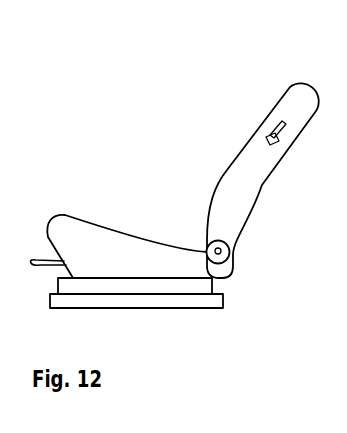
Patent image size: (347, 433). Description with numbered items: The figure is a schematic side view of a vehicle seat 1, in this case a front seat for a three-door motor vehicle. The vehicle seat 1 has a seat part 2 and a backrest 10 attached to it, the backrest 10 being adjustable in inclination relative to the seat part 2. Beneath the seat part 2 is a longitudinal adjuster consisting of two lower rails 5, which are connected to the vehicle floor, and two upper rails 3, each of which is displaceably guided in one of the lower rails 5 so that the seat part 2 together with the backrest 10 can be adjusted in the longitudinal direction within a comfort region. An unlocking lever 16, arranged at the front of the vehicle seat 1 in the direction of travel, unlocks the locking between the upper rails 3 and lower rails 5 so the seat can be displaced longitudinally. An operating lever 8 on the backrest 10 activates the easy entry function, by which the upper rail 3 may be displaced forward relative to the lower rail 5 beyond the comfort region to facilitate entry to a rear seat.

The vehicle seat 1 is at (96, 136).
The seat part 2 is at (105, 248).
The upper rail 3 is at (193, 290).
The lower rail 5 is at (201, 298).
The operating lever 8 is at (270, 133).
The backrest 10 is at (230, 170).
The unlocking lever 16 is at (33, 258).